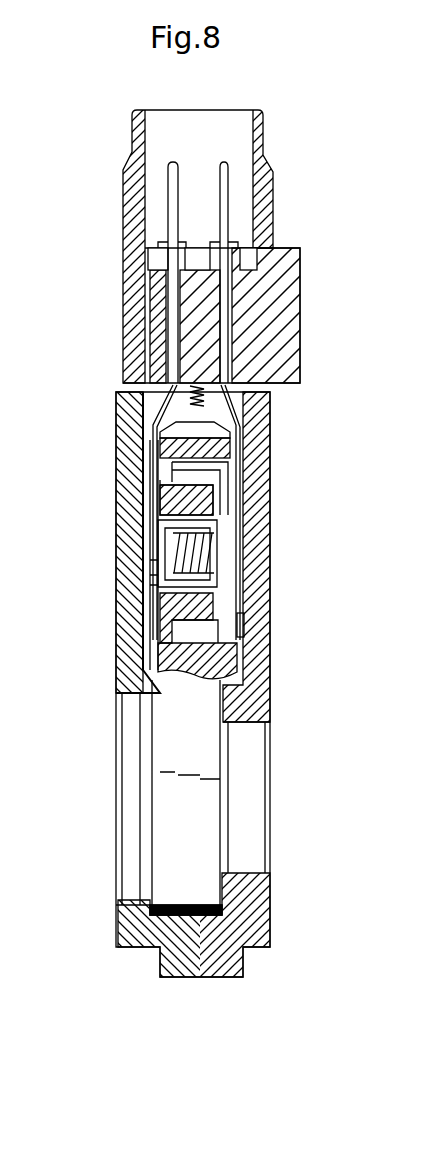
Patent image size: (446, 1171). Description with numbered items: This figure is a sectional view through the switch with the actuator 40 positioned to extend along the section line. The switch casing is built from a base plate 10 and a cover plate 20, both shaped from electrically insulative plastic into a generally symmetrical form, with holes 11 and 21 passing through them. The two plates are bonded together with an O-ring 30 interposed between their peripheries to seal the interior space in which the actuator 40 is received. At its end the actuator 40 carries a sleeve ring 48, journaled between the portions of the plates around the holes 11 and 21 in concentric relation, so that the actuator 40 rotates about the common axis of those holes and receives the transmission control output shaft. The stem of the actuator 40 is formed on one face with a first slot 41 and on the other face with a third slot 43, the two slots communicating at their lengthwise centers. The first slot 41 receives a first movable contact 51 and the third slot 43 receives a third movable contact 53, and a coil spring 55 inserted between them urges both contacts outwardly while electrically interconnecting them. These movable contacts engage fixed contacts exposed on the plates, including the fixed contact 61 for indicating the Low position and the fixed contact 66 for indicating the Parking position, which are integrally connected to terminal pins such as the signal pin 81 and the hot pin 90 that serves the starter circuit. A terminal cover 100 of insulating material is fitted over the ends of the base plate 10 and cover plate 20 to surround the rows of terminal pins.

The terminal cover 100 is at (125, 232).
The terminal pin 90 is at (172, 190).
The terminal pin 81 is at (227, 213).
The O-ring 30 is at (200, 403).
The base plate 10 is at (270, 418).
The cover plate 20 is at (120, 432).
The actuator 40 is at (153, 430).
The first slot 41 is at (243, 472).
The fixed contact 61 is at (240, 484).
The first movable contact 51 is at (228, 540).
The coil spring 55 is at (160, 552).
The third movable contact 53 is at (157, 572).
The third slot 43 is at (157, 596).
The fixed contact 66 is at (243, 622).
The hole 21 is at (122, 713).
The sleeve ring 48 is at (165, 858).
The hole 11 is at (252, 833).